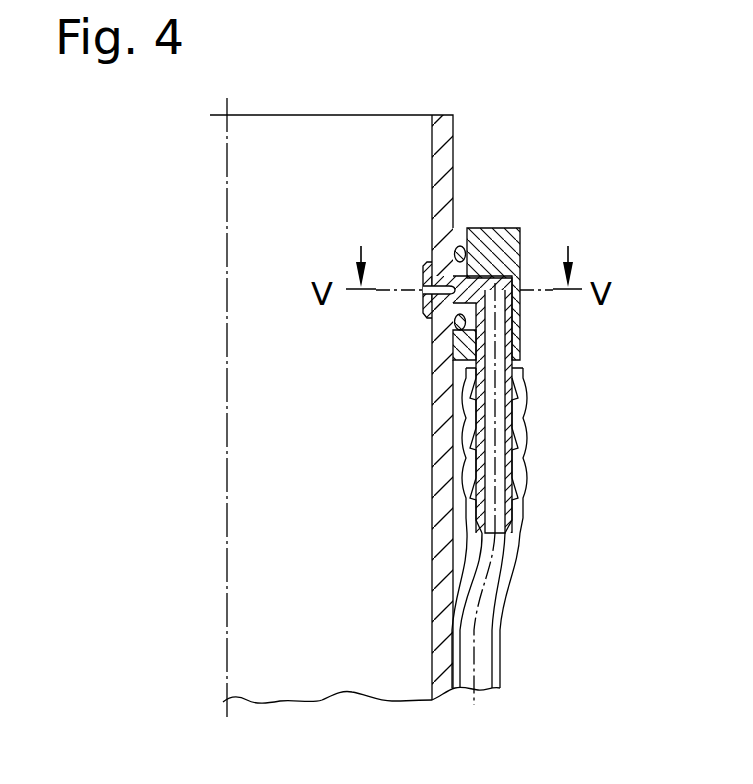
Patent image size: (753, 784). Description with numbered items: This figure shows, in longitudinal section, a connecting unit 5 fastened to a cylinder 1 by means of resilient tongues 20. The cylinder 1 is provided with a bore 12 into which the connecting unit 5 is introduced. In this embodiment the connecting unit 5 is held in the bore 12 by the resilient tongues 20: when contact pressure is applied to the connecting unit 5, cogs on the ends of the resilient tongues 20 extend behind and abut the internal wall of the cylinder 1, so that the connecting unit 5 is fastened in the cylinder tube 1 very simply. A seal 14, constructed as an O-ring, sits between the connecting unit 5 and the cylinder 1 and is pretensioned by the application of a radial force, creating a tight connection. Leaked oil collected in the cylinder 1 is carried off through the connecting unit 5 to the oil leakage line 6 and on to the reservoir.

The cylinder 1 is at (441, 150).
The connecting unit 5 is at (513, 306).
The oil leakage line 6 is at (520, 432).
The bore 12 is at (468, 325).
The seal 14 is at (456, 230).
The resilient tongues 20 is at (462, 266).